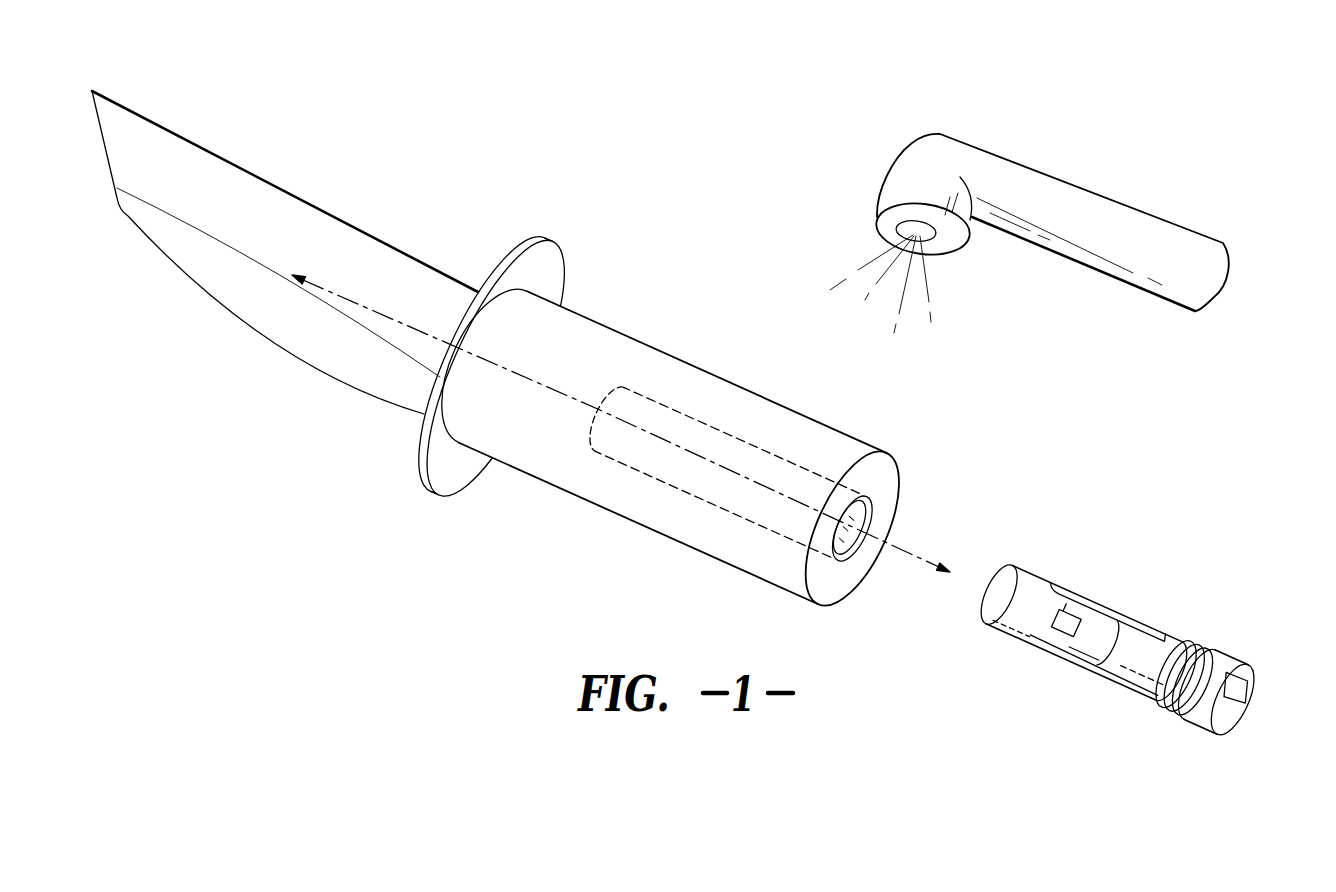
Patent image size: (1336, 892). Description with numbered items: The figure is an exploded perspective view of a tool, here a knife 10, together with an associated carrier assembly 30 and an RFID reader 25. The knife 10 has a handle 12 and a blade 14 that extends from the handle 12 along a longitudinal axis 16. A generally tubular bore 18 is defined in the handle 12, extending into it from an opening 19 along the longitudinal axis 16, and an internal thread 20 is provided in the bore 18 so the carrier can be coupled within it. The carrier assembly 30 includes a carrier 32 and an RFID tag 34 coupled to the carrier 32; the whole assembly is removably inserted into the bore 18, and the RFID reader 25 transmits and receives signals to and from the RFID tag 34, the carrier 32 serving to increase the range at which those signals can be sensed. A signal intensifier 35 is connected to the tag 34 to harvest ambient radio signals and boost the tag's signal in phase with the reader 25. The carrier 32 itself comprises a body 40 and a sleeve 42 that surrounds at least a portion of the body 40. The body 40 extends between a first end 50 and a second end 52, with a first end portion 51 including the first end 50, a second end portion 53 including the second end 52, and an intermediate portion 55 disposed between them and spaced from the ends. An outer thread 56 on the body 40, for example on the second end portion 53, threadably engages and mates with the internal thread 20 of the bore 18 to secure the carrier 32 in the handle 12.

The knife 10 is at (711, 150).
The handle 12 is at (603, 318).
The blade 14 is at (244, 166).
The longitudinal axis 16 is at (908, 558).
The bore 18 is at (870, 522).
The opening 19 is at (884, 493).
The internal thread 20 is at (850, 556).
The RFID reader 25 is at (999, 134).
The carrier assembly 30 is at (1108, 556).
The carrier 32 is at (1033, 564).
The RFID tag 34 is at (1136, 605).
The signal intensifier 35 is at (1051, 632).
The body 40 is at (1055, 647).
The sleeve 42 is at (1117, 685).
The first end 50 is at (1001, 583).
The first end portion 51 is at (988, 634).
The second end 52 is at (1238, 693).
The second end portion 53 is at (1179, 730).
The intermediate portion 55 is at (1095, 681).
The outer thread 56 is at (1194, 640).